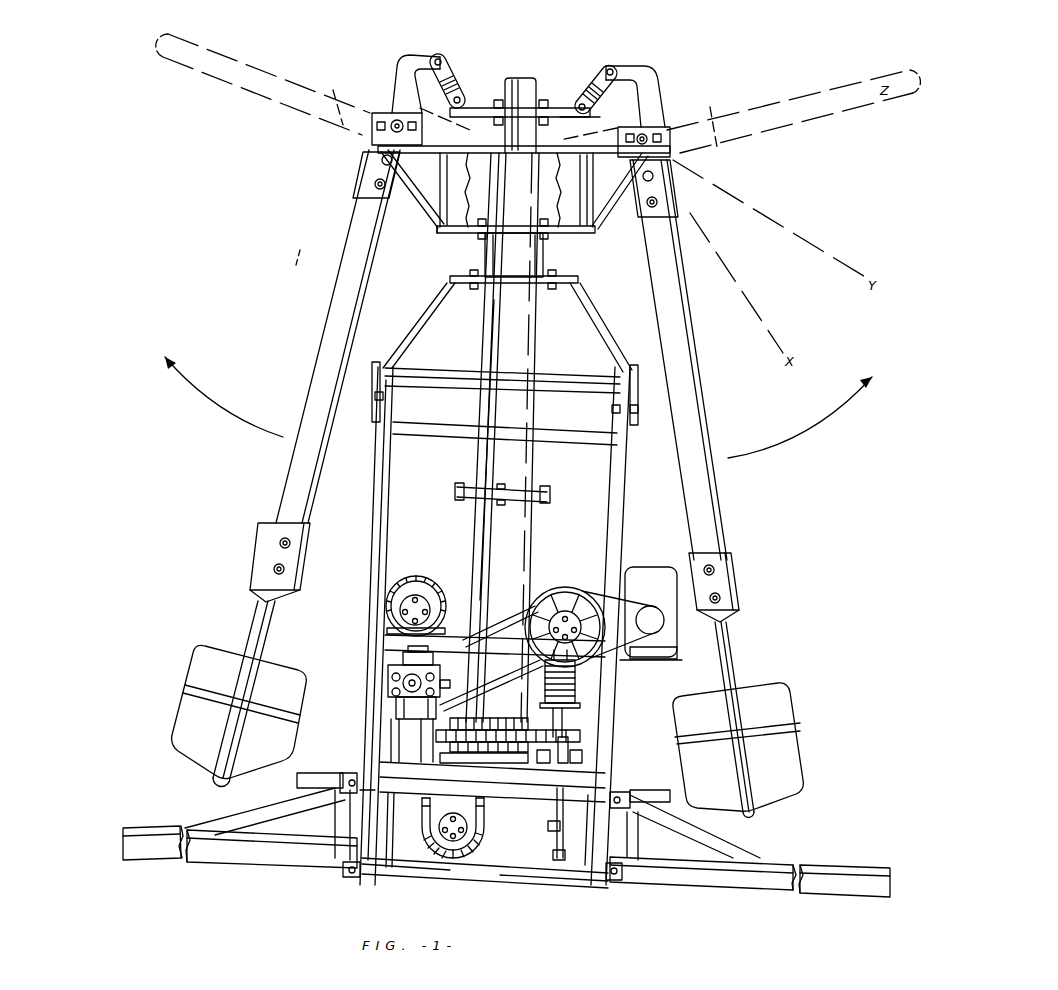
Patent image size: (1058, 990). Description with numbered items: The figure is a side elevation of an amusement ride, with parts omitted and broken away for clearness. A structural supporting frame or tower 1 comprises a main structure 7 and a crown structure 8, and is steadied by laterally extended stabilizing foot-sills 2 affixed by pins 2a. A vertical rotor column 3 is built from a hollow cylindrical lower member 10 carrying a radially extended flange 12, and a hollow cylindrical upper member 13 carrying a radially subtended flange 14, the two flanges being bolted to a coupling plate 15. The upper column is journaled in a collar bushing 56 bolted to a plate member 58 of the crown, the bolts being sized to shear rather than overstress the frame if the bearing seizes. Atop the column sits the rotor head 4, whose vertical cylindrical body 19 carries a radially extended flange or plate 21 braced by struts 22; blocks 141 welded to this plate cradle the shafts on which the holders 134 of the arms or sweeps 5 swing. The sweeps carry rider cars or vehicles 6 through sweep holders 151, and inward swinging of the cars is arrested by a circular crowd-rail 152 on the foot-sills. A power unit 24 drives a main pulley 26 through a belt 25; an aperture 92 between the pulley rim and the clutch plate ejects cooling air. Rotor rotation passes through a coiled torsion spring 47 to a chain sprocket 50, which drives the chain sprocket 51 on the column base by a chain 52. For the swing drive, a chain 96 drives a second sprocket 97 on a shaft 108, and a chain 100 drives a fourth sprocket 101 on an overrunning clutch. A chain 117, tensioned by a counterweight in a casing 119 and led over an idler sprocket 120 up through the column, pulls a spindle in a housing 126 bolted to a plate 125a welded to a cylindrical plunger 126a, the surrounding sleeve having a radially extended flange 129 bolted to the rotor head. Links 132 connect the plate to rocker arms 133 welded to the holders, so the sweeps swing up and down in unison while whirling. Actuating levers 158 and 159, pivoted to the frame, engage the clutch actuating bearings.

The structural supporting frame or tower 1 is at (370, 503).
The stabilizing foot-sills 2 is at (262, 857).
The pins 2a is at (345, 866).
The vertical rotor column 3 is at (530, 538).
The rotor head 4 is at (442, 231).
The arms or sweeps 5 is at (222, 84).
The rider cars or vehicles 6 is at (199, 645).
The main structure 7 is at (620, 480).
The crown structure 8 is at (597, 328).
The hollow cylindrical lower member 10 is at (478, 522).
The radially extended flange 12 is at (548, 500).
The hollow cylindrical upper member 13 is at (488, 242).
The radially subtended flange 14 is at (524, 487).
The coupling plate 15 is at (549, 493).
The vertical cylindrical body 19 is at (452, 214).
The radially extended flange or plate 21 is at (467, 150).
The struts 22 is at (437, 197).
The power unit 24 is at (648, 567).
The belt 25 is at (636, 605).
The main pulley 26 is at (584, 590).
The coiled torsion spring 47 is at (577, 684).
The chain sprocket 50 is at (580, 740).
The chain sprocket 51 is at (483, 720).
The chain 52 is at (436, 734).
The collar bushing 56 is at (544, 260).
The plate member 58 is at (578, 276).
The aperture 92 is at (557, 590).
The chain 96 is at (490, 631).
The second sprocket 97 is at (408, 705).
The chain 100 is at (433, 584).
The fourth sprocket 101 is at (412, 577).
The shaft 108 is at (388, 678).
The chain 117 is at (484, 817).
The casing 119 is at (383, 852).
The idler sprocket 120 is at (474, 846).
The plate 125a is at (551, 110).
The housing 126 is at (527, 80).
The cylindrical plunger 126a is at (585, 120).
The radially extended flange 129 is at (555, 234).
The links 132 is at (443, 70).
The rocker arms 133 is at (393, 75).
The holders 134 is at (368, 167).
The blocks 141 is at (383, 135).
The sweep holders 151 is at (266, 545).
The circular crowd-rail 152 is at (312, 776).
The actuating lever 158 is at (560, 856).
The actuating lever 159 is at (548, 824).